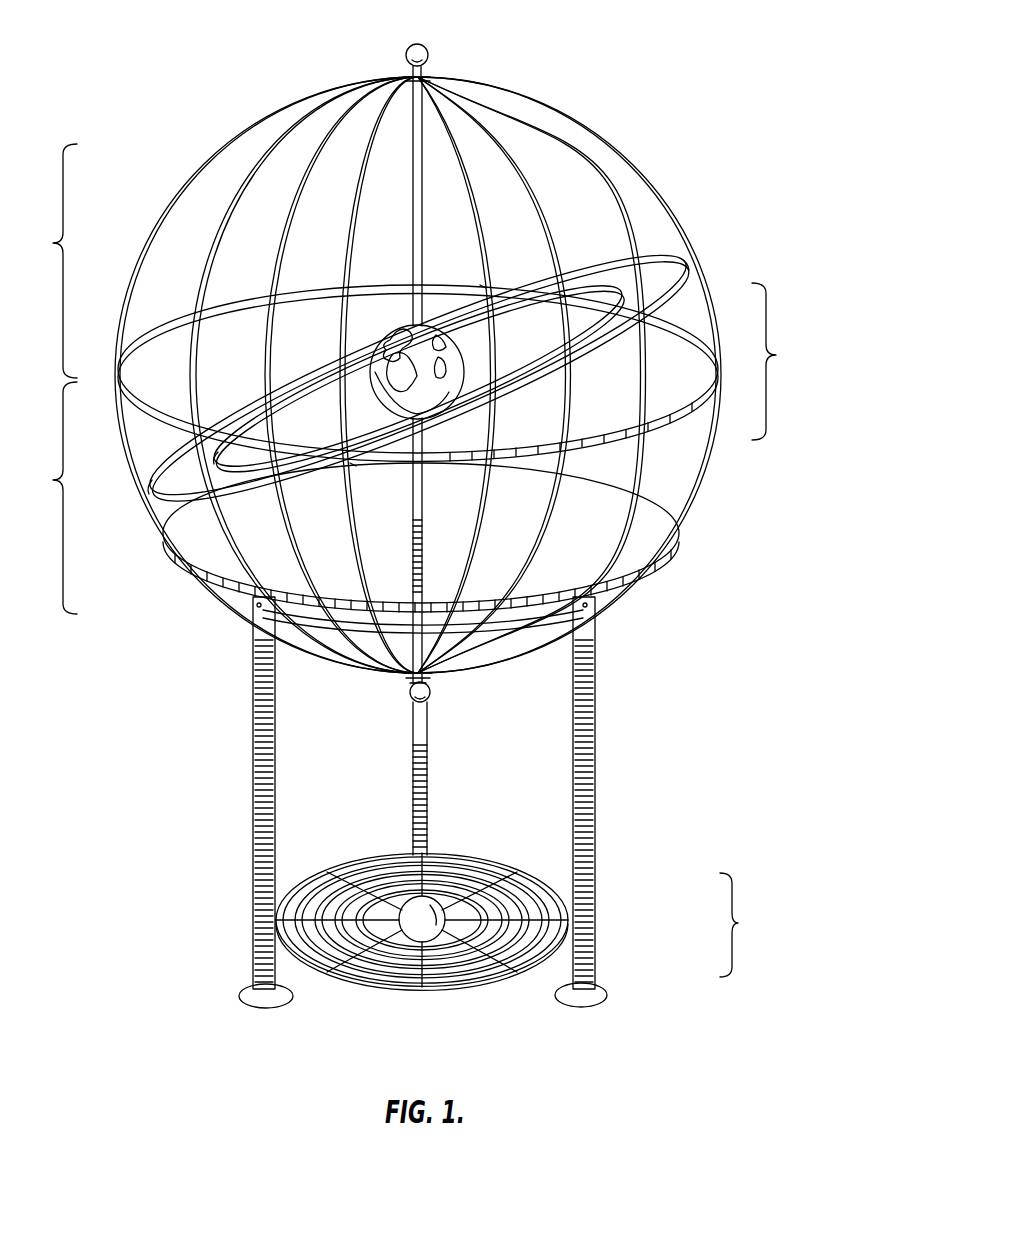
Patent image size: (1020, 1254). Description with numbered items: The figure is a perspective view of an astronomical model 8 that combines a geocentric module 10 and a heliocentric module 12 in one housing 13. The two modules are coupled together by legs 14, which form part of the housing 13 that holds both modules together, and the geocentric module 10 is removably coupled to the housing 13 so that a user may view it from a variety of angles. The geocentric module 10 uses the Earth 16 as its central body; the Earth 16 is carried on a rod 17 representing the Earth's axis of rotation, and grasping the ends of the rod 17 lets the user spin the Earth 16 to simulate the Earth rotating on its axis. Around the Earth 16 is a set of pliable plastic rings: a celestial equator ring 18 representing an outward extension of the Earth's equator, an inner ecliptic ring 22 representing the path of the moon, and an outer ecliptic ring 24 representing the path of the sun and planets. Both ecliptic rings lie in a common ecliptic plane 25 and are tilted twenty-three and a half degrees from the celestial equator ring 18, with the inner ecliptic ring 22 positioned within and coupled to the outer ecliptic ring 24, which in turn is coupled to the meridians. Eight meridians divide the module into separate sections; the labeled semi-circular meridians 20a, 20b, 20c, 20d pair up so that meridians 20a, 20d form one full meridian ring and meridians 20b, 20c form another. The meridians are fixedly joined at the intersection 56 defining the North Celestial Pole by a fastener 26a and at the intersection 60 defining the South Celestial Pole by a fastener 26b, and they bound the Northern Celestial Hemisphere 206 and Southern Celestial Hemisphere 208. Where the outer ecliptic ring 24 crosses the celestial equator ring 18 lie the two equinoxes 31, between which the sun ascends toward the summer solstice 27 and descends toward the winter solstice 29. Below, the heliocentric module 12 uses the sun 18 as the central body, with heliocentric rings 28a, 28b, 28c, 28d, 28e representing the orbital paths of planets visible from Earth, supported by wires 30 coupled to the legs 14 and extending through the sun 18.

The armillary sphere apparatus 8 is at (700, 58).
The geocentric module 10 is at (632, 129).
The heliocentric module 12 is at (602, 883).
The housing 13 is at (660, 619).
The legs 14 is at (596, 722).
The Earth 16 is at (385, 338).
The rod 17 is at (419, 215).
The celestial equator ring 18 is at (672, 328).
The meridian 20a is at (536, 101).
The meridian 20b is at (492, 95).
The meridian 20c is at (226, 216).
The meridian 20d is at (261, 116).
The inner ecliptic ring 22 is at (606, 255).
The outer ecliptic ring 24 is at (668, 250).
The ecliptic plane 25 is at (183, 471).
The fastener 26a is at (428, 48).
The fastener 26b is at (408, 692).
The summer solstice 27 is at (692, 265).
The heliocentric ring 28a is at (478, 955).
The heliocentric ring 28b is at (340, 946).
The heliocentric ring 28c is at (380, 963).
The heliocentric ring 28d is at (446, 975).
The heliocentric ring 28e is at (400, 982).
The winter solstice 29 is at (147, 490).
The wires 30 is at (484, 873).
The equinoxes 31 is at (480, 283).
The intersection of the meridians 56 is at (440, 61).
The intersection of the meridians 60 is at (442, 680).
The Northern Celestial Hemisphere 206 is at (46, 261).
The Southern Celestial Hemisphere 208 is at (46, 498).